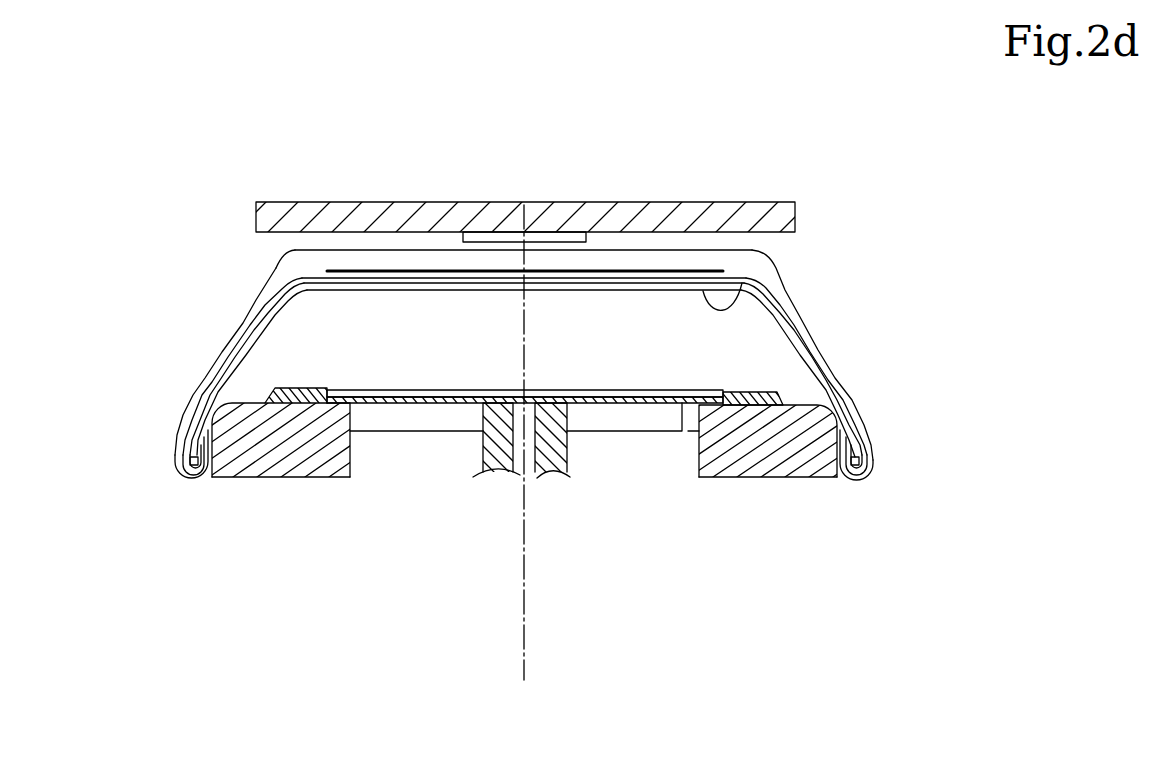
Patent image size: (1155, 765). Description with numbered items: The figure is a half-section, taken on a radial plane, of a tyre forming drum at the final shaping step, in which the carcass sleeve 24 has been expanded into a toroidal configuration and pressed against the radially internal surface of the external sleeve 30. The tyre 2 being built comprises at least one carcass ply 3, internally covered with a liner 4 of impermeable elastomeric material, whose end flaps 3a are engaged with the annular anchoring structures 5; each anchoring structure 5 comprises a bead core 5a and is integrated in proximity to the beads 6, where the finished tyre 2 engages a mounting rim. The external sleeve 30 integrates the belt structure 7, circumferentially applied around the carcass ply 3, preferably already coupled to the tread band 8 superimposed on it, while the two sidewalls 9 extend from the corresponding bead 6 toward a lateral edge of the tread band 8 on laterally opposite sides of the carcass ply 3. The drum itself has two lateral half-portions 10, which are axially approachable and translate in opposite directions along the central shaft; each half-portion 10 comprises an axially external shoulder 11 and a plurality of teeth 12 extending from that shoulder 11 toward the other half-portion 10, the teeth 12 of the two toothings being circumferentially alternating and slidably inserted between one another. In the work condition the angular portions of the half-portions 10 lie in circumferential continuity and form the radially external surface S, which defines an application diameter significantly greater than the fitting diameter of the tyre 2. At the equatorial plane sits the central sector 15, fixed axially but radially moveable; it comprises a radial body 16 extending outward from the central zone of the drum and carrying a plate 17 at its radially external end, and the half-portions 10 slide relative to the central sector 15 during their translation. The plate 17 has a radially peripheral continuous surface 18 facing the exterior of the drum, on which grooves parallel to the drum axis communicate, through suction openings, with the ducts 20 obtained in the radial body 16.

The tyre 2 is at (793, 260).
The carcass ply 3 is at (803, 313).
The end flaps 3a is at (840, 392).
The liner 4 is at (742, 283).
The annular anchoring structures 5 is at (866, 447).
The bead core 5a is at (853, 437).
The beads 6 is at (177, 433).
The belt structure 7 is at (675, 272).
The tread band 8 is at (707, 262).
The sidewalls 9 is at (222, 357).
The lateral half-portions 10 is at (315, 481).
The axially external shoulder 11 is at (243, 457).
The teeth 12 is at (632, 423).
The central sector 15 is at (478, 452).
The radial body 16 is at (550, 454).
The plate 17 is at (617, 390).
The radially peripheral continuous surface 18 is at (440, 393).
The ducts 20 is at (518, 452).
The carcass sleeve 24 is at (233, 303).
The external sleeve 30 is at (492, 278).
The radially external surface S is at (358, 395).